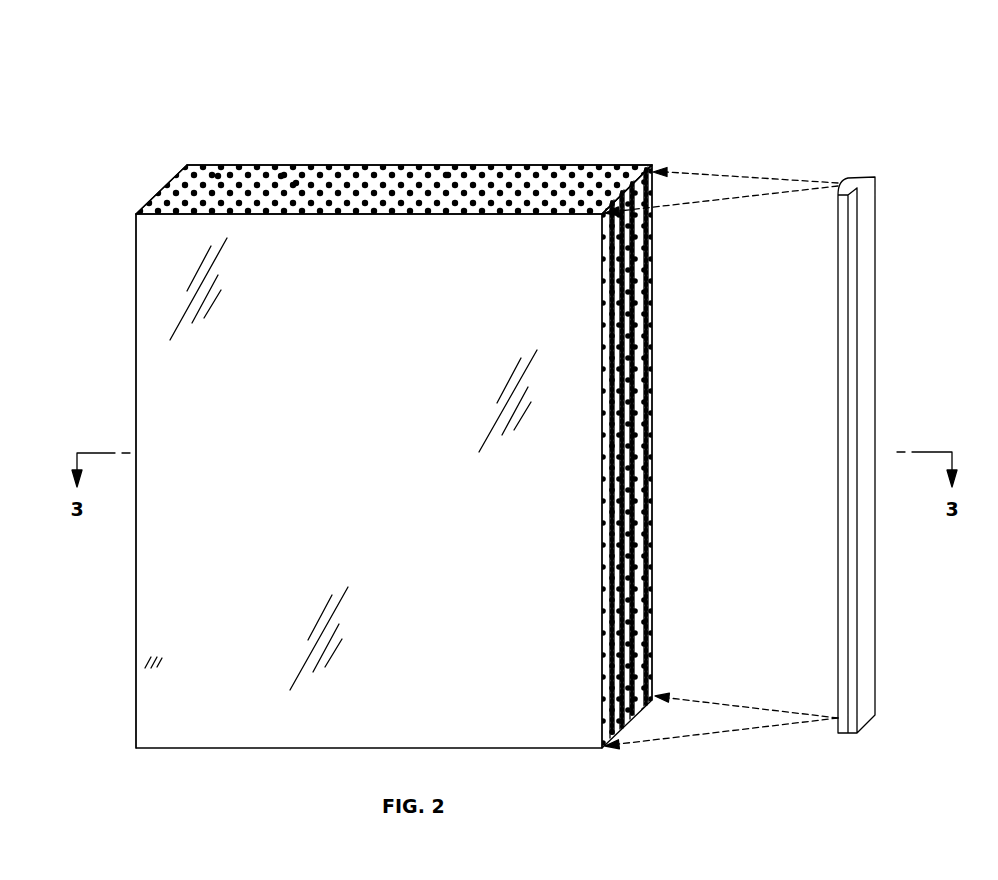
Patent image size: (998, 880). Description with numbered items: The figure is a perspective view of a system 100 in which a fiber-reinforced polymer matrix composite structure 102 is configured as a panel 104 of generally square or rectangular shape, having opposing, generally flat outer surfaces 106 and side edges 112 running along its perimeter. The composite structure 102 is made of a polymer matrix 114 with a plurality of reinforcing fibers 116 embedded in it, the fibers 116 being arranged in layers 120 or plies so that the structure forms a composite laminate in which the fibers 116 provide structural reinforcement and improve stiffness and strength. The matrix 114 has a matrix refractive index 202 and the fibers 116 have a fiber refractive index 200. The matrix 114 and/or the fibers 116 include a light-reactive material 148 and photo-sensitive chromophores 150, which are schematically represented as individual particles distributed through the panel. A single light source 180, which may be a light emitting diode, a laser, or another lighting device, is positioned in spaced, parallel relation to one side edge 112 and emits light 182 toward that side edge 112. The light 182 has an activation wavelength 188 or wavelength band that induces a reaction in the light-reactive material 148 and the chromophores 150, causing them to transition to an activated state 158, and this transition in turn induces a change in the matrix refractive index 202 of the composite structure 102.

The system 100 is at (137, 98).
The composite structure 102 is at (124, 208).
The panel 104 is at (122, 303).
The outer surfaces 106 is at (533, 168).
The side edges 112 is at (136, 590).
The polymer matrix 114 is at (352, 170).
The reinforcing fibers 116 is at (650, 350).
The layers 120 is at (638, 180).
The light-reactive material 148 is at (650, 586).
The chromophores 150 is at (296, 180).
The activated state 158 is at (448, 172).
The light source 180 is at (878, 168).
The light 182 is at (744, 164).
The activation wavelength 188 is at (733, 196).
The fiber refractive index 200 is at (650, 373).
The matrix refractive index 202 is at (218, 173).